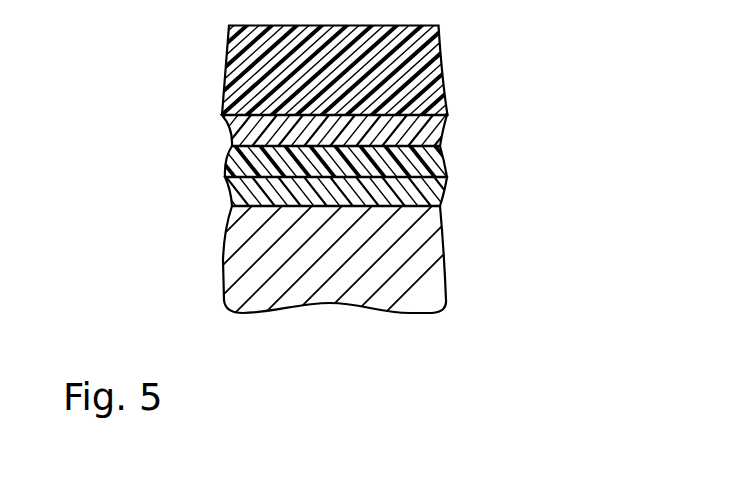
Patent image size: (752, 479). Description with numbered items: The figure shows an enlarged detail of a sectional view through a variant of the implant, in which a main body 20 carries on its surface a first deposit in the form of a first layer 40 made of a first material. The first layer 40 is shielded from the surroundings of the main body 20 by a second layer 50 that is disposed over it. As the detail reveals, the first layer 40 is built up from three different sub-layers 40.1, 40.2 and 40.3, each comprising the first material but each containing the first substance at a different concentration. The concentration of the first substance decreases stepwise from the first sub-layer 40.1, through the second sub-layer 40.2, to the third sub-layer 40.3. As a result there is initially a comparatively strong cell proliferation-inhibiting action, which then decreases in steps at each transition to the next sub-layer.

The second layer 50 is at (446, 78).
The first layer 40 is at (332, 148).
The first sub-layer 40.1 is at (222, 124).
The second sub-layer 40.2 is at (227, 163).
The third sub-layer 40.3 is at (235, 196).
The main body 20 is at (410, 277).